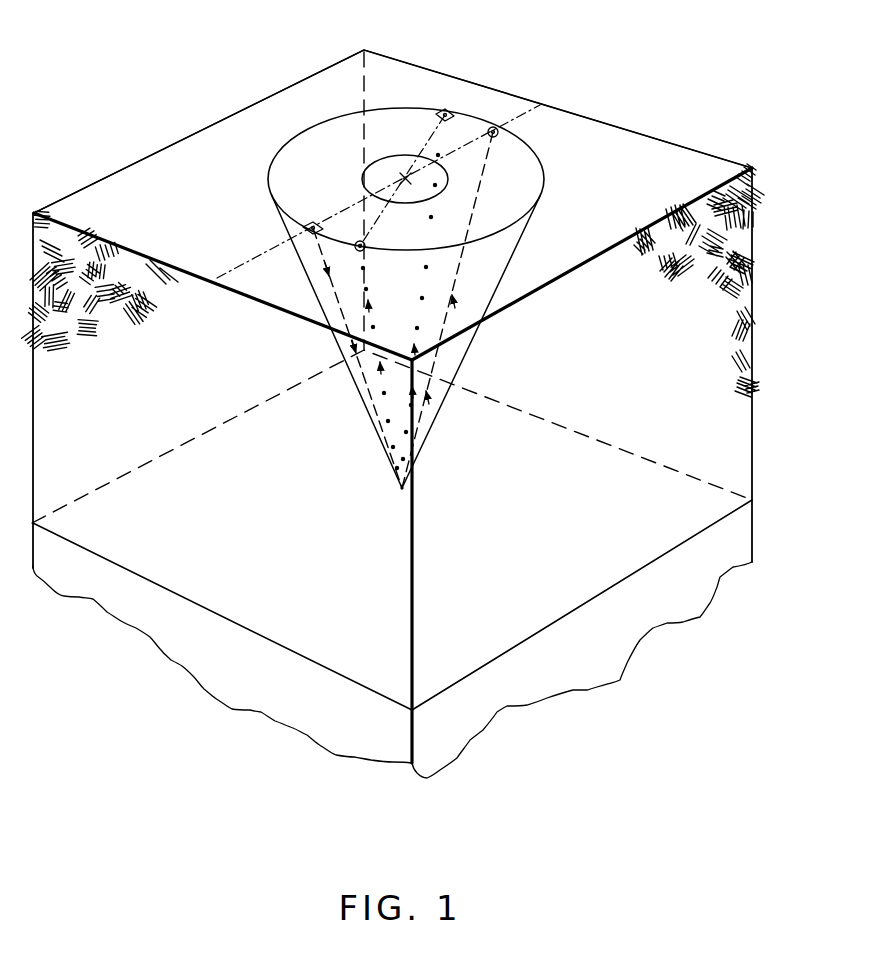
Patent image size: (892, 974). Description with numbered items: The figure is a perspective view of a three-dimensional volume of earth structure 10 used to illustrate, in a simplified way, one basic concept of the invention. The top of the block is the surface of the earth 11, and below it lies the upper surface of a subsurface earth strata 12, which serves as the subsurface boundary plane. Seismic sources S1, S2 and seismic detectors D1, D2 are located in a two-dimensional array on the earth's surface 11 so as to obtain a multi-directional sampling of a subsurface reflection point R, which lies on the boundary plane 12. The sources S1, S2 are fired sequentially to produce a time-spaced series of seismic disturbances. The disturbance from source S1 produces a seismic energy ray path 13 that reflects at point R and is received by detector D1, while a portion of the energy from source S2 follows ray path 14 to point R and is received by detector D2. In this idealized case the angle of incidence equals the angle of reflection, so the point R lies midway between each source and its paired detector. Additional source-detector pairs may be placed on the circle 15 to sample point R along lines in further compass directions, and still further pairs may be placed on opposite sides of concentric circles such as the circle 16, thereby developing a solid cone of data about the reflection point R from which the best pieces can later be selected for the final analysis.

The volume of earth structure 10 is at (754, 252).
The surface of the earth 11 is at (680, 162).
The upper surface of subsurface earth strata 12 is at (690, 503).
The seismic energy ray path 13 is at (332, 302).
The ray path 14 is at (425, 286).
The circle 15 is at (297, 137).
The circle 16 is at (400, 155).
The seismic source S1 is at (302, 226).
The seismic source S2 is at (446, 110).
The seismic detector D1 is at (498, 130).
The seismic detector D2 is at (365, 244).
The subsurface reflection point R is at (402, 489).